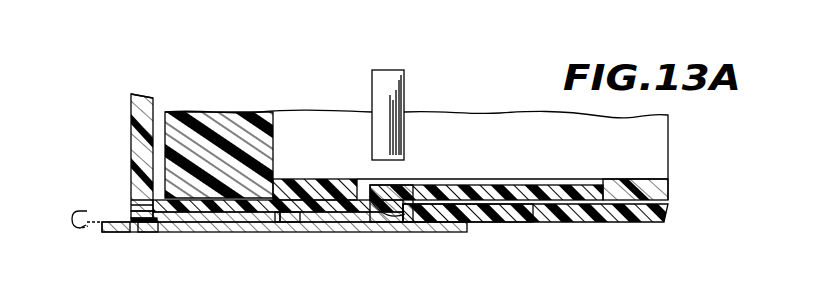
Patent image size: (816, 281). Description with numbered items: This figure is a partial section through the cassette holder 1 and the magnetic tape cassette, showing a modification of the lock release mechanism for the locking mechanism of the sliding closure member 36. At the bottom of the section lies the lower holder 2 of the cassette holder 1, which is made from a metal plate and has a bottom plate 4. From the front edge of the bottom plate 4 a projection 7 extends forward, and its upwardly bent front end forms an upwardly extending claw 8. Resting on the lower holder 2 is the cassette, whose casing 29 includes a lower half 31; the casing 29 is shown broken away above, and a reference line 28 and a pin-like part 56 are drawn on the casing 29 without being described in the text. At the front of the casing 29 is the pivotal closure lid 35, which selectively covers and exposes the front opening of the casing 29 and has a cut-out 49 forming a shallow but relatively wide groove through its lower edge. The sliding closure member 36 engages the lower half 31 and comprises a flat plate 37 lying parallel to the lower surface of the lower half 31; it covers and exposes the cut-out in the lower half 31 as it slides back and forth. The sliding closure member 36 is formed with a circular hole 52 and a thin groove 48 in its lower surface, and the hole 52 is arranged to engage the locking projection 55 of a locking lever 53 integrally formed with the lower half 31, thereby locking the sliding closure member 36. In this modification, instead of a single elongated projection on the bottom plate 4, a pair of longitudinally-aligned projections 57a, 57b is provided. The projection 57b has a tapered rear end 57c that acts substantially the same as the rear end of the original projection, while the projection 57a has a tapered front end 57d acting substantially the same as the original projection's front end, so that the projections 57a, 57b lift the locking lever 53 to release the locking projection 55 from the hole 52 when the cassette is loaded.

The cassette holder 1 is at (433, 233).
The lower holder 2 is at (110, 233).
The bottom plate 4 is at (284, 224).
The projections 7 is at (88, 228).
The claws 8 is at (72, 213).
The wall top 28 is at (152, 97).
The casing 29 is at (502, 126).
The lower half 31 is at (652, 188).
The pivotal closure lid 35 is at (131, 151).
The sliding closure member 36 is at (526, 224).
The flat plate 37 is at (583, 224).
The thin groove 48 is at (264, 214).
The cut-out 49 is at (146, 233).
The circular hole 52 is at (362, 216).
The locking lever 53 is at (425, 187).
The locking projection 55 is at (388, 215).
The pin 56 is at (405, 83).
The projection 57a is at (200, 222).
The projection 57b is at (314, 222).
The tapered rear end 57c is at (350, 180).
The tapered front end 57d is at (150, 208).